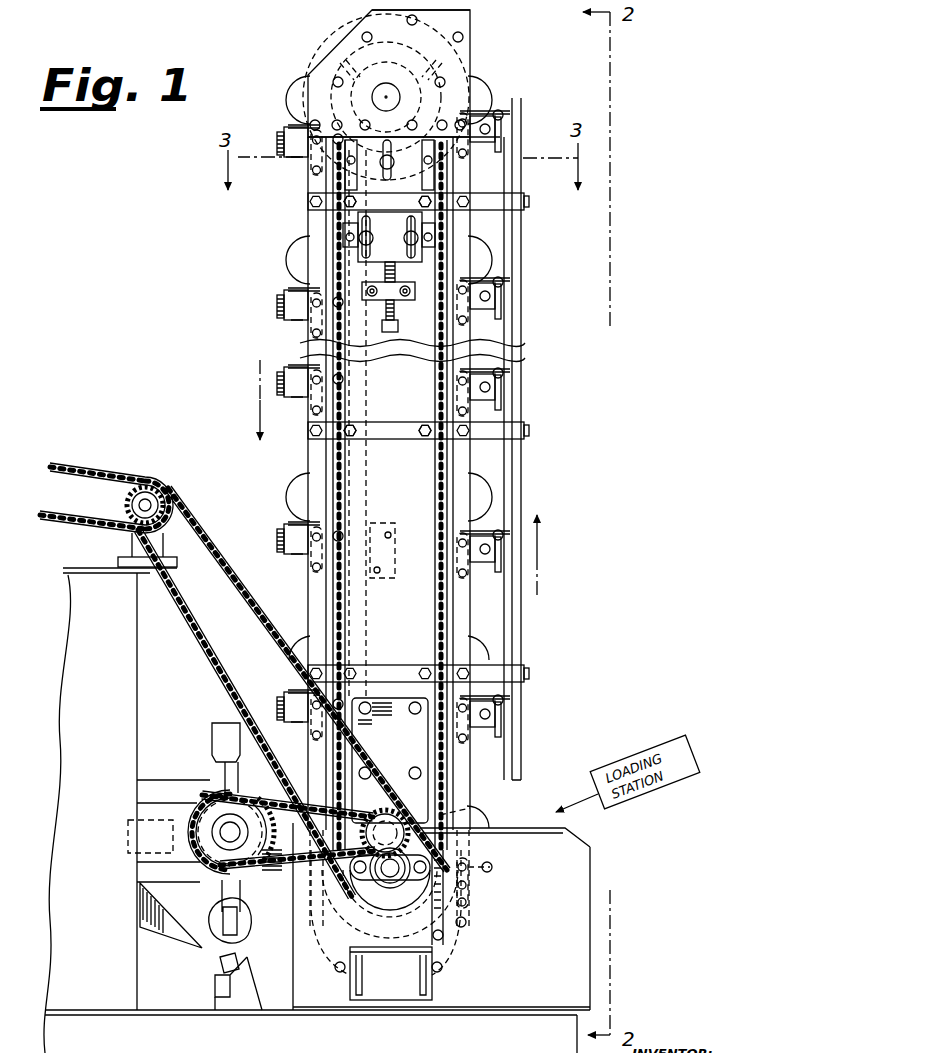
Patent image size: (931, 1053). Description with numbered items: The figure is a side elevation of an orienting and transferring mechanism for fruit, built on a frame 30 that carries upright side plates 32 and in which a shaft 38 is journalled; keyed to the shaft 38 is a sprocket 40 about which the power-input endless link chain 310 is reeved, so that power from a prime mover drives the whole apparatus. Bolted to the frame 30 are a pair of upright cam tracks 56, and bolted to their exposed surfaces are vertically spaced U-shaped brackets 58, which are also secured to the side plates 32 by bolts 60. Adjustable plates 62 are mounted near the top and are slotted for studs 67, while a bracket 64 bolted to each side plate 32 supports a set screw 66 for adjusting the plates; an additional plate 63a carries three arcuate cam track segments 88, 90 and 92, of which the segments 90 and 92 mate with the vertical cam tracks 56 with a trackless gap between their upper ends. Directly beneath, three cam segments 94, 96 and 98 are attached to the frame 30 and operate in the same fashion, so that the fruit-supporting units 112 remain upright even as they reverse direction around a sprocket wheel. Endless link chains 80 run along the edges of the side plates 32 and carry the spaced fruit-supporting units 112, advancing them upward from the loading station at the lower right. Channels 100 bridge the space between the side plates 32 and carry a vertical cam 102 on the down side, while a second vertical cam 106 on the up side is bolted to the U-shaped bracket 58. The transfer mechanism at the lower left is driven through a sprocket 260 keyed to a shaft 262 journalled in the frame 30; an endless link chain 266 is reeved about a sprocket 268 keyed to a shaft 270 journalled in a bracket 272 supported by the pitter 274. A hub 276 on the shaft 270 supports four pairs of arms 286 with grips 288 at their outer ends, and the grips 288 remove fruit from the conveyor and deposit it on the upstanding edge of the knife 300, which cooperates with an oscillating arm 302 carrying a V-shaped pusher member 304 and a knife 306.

The frame 30 is at (390, 760).
The upright side plates 32 is at (412, 376).
The shaft 38 is at (389, 870).
The sprocket 40 is at (382, 818).
The upright cam tracks 56 is at (312, 254).
The U-shaped brackets 58 is at (507, 204).
The bolts 60 is at (423, 201).
The plate 62 is at (389, 236).
The additional plate 63a is at (472, 66).
The bracket 64 is at (396, 301).
The set screw 66 is at (397, 325).
The studs 67 is at (409, 241).
The endless link chains 80 is at (335, 240).
The arcuate cam track segment 88 is at (372, 12).
The arcuate cam track segment 90 is at (456, 95).
The arcuate cam track segment 92 is at (323, 72).
The cam segment 94 is at (466, 921).
The cam segment 96 is at (462, 952).
The cam segment 98 is at (310, 955).
The channels 100 is at (400, 525).
The vertical cam 102 is at (360, 415).
The second vertical cam 106 is at (505, 640).
The fruit-supporting units 112 is at (287, 123).
The sprocket 260 is at (456, 805).
The shaft 262 is at (457, 851).
The endless link chain 266 is at (264, 890).
The sprocket 268 is at (208, 805).
The shaft 270 is at (208, 862).
The bracket 272 is at (151, 790).
The pitter 274 is at (110, 810).
The hub 276 is at (263, 793).
The arms 286 is at (224, 774).
The grips 288 is at (236, 922).
The knife 300 is at (172, 907).
The oscillating arm 302 is at (243, 1003).
The V-shaped pusher member 304 is at (216, 980).
The knife 306 is at (220, 965).
The endless link chain 310 is at (206, 642).